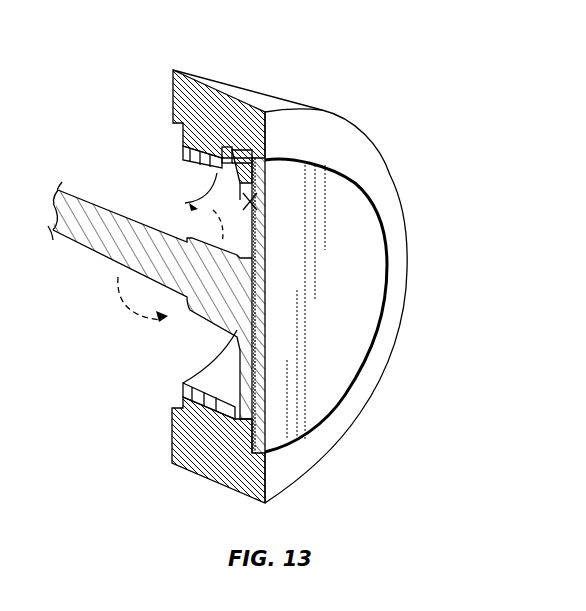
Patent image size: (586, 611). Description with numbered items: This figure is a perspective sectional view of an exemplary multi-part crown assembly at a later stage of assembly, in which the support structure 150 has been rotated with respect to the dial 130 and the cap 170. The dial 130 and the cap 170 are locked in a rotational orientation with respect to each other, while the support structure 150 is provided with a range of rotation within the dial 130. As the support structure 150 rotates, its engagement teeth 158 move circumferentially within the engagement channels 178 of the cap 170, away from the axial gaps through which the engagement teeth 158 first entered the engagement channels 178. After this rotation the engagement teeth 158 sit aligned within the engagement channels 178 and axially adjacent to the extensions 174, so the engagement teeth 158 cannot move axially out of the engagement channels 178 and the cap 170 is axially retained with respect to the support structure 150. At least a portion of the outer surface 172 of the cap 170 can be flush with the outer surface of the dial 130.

The dial 130 is at (278, 98).
The support structure 150 is at (68, 192).
The engagement teeth 158 is at (265, 195).
The cap 170 is at (353, 293).
The outer surface 172 is at (310, 397).
The extensions 174 is at (218, 165).
The engagement channels 178 is at (197, 208).